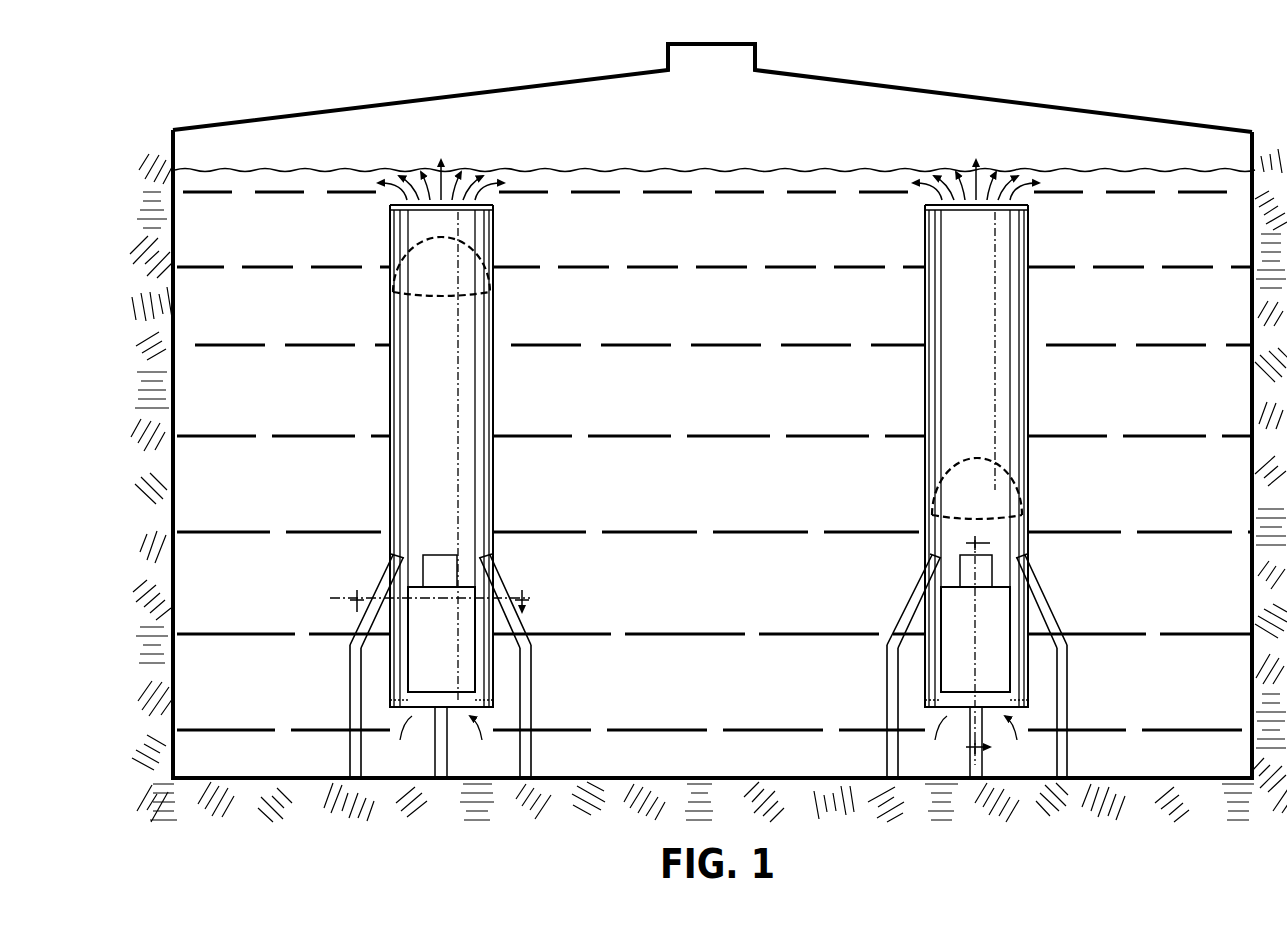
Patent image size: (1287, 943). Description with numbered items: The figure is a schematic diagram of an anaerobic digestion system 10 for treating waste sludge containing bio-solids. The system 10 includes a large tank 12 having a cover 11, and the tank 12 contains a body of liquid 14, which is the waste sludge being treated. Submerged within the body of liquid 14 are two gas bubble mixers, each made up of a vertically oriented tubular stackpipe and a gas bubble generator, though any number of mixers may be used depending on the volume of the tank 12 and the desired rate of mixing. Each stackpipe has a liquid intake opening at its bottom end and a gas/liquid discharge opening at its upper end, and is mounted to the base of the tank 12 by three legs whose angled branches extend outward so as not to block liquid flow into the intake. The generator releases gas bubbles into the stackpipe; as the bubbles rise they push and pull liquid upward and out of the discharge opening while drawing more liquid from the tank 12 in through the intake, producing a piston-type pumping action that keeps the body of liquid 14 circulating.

The anaerobic digestion system 10 is at (712, 408).
The cover 11 is at (970, 93).
The tank 12 is at (177, 142).
The body of liquid 14 is at (648, 212).